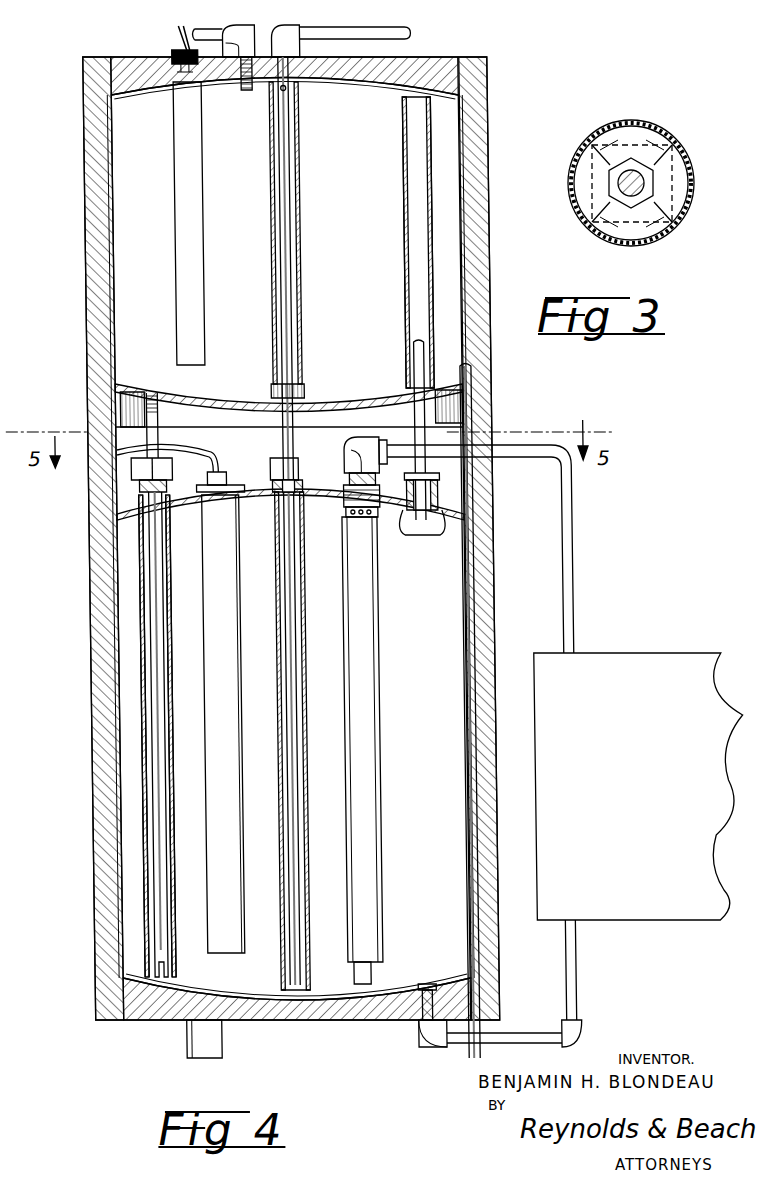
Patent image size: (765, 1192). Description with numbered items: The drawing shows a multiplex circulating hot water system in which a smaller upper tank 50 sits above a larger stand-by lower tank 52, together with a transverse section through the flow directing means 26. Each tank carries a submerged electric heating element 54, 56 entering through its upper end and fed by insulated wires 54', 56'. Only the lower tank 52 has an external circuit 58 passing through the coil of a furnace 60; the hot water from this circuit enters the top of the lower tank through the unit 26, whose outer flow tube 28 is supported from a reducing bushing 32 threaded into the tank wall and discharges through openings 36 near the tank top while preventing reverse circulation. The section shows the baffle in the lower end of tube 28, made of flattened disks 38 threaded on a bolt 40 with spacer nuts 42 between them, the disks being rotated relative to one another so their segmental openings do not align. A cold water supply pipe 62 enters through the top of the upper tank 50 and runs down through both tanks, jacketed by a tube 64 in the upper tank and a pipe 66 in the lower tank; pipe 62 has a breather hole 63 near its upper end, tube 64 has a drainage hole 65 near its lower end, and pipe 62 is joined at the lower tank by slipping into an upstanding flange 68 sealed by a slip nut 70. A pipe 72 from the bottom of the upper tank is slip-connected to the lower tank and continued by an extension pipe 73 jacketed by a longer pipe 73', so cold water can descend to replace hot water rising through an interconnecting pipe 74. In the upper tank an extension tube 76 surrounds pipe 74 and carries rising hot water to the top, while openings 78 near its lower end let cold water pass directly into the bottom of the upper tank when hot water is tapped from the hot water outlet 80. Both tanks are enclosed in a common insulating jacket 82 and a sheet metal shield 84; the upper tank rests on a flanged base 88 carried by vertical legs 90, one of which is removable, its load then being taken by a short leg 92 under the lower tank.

In FIG. 4, the flow directing means 26 is at (376, 690).
In FIG. 4, the outer flow tube 28 is at (362, 978).
In FIG. 3, the outer flow tube 28 is at (689, 202).
In FIG. 4, the reducing bushing 32 is at (336, 476).
In FIG. 4, the openings 36 is at (369, 512).
In FIG. 3, the disks 38 is at (636, 138).
In FIG. 3, the bolt 40 is at (640, 170).
In FIG. 3, the spacer nuts 42 is at (648, 178).
In FIG. 4, the upper tank 50 is at (118, 220).
In FIG. 4, the lower tank 52 is at (112, 765).
In FIG. 4, the electric heating element 54 is at (213, 223).
In FIG. 4, the insulated wires 54' is at (156, 48).
In FIG. 4, the electric heating element 56 is at (240, 724).
In FIG. 4, the insulated wires 56' is at (130, 471).
In FIG. 4, the external circuit 58 is at (563, 510).
In FIG. 4, the furnace 60 is at (626, 660).
In FIG. 4, the cold water supply pipe 62 is at (411, 33).
In FIG. 4, the breather hole 63 is at (285, 88).
In FIG. 4, the jacketing tube 64 is at (298, 288).
In FIG. 4, the drainage hole 65 is at (271, 402).
In FIG. 4, the jacketing pipe 66 is at (298, 836).
In FIG. 4, the upstanding flange 68 is at (264, 486).
In FIG. 4, the slip nut 70 is at (277, 460).
In FIG. 4, the pipe 72 is at (152, 436).
In FIG. 4, the extension pipe 73 is at (173, 736).
In FIG. 4, the jacketing pipe 73' is at (181, 734).
In FIG. 4, the interconnecting pipe 74 is at (416, 420).
In FIG. 4, the extension tube 76 is at (402, 172).
In FIG. 4, the openings 78 is at (408, 352).
In FIG. 4, the hot water outlet 80 is at (247, 38).
In FIG. 4, the insulating jacket 82 is at (92, 577).
In FIG. 4, the sheet metal shield 84 is at (92, 633).
In FIG. 4, the flanged base 88 is at (116, 400).
In FIG. 4, the legs 90 is at (203, 1047).
In FIG. 4, the short leg 92 is at (445, 1052).